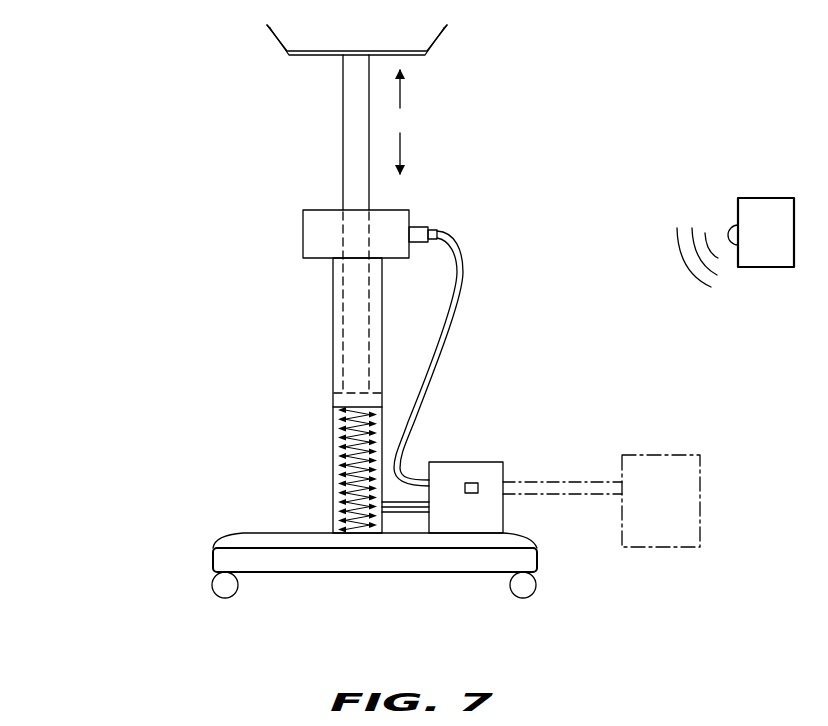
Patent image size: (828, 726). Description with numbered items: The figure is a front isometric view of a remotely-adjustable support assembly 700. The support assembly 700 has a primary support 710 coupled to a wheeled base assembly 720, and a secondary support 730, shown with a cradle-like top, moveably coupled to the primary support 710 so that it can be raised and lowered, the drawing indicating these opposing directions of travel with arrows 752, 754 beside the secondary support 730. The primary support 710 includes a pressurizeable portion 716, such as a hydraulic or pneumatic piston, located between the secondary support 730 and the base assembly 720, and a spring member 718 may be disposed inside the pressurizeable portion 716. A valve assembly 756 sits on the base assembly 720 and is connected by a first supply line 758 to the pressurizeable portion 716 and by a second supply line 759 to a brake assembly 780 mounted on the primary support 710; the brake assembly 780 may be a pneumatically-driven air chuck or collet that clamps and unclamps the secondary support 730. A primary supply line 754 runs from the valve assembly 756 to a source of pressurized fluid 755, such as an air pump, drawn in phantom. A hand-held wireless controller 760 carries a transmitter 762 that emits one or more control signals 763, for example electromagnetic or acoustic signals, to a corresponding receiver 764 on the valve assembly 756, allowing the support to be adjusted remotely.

The remotely-adjustable support assembly 700 is at (108, 60).
The primary support 710 is at (293, 315).
The pressurizeable portion 716 is at (334, 478).
The spring member 718 is at (334, 436).
The base assembly 720 is at (195, 516).
The secondary support 730 is at (260, 86).
The upward movement direction 752 is at (405, 97).
The primary supply line 754 is at (405, 142).
The external power source 755 is at (704, 478).
The valve assembly 756 is at (467, 462).
The first supply line 758 is at (407, 512).
The second supply line 759 is at (464, 302).
The wireless controller 760 is at (738, 188).
The transmitter 762 is at (728, 229).
The control signals 763 is at (725, 292).
The receiver 764 is at (472, 493).
The brake assembly 780 is at (410, 218).